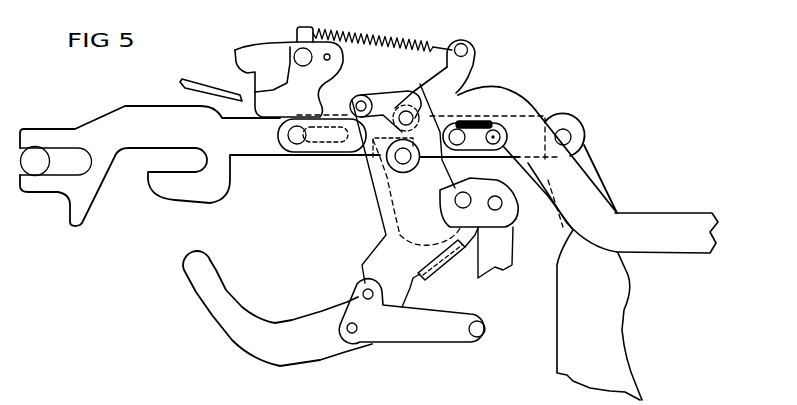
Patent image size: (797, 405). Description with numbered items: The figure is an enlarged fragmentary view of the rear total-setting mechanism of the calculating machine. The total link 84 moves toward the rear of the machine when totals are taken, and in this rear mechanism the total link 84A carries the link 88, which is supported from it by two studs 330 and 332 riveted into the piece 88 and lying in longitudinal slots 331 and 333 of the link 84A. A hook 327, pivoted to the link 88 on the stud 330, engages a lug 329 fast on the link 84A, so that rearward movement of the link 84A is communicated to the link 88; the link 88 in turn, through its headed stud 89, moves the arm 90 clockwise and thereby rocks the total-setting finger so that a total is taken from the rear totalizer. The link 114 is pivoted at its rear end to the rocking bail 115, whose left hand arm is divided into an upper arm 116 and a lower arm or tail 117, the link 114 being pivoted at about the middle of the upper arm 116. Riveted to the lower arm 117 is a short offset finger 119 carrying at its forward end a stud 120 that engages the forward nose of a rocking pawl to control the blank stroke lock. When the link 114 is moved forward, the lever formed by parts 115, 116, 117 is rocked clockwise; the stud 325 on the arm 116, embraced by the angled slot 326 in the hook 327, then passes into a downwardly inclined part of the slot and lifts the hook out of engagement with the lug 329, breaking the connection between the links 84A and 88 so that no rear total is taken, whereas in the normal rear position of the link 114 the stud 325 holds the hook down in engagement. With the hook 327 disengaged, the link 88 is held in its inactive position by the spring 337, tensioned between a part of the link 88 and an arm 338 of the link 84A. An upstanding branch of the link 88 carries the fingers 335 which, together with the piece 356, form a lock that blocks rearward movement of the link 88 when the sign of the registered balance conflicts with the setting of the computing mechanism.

The total link 84A is at (178, 118).
The sear lever 335 is at (277, 52).
The piece 356 is at (213, 80).
The spring 337 is at (380, 38).
The arm 338 is at (467, 46).
The stud 332 is at (466, 97).
The longitudinal slot 333 is at (473, 123).
The stud 325 is at (362, 96).
The angled slot 326 is at (385, 100).
The hook 327 is at (402, 102).
The lug 329 is at (400, 173).
The headed stud 89 is at (407, 164).
The link 88 is at (316, 103).
The stud 330 is at (298, 137).
The longitudinal slot 331 is at (336, 143).
The upper arm 116 is at (380, 180).
The arm 90 is at (393, 218).
The rocking bail 115 is at (424, 263).
The lower arm 117 is at (248, 337).
The offset finger 119 is at (458, 340).
The stud 120 is at (482, 333).
The link 114 is at (697, 223).
The total link 84 is at (633, 350).